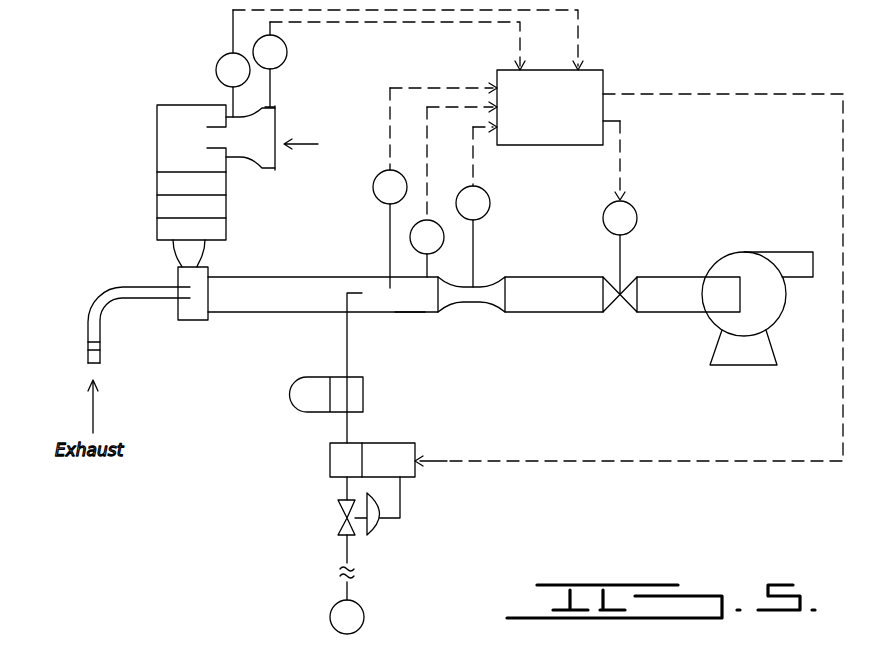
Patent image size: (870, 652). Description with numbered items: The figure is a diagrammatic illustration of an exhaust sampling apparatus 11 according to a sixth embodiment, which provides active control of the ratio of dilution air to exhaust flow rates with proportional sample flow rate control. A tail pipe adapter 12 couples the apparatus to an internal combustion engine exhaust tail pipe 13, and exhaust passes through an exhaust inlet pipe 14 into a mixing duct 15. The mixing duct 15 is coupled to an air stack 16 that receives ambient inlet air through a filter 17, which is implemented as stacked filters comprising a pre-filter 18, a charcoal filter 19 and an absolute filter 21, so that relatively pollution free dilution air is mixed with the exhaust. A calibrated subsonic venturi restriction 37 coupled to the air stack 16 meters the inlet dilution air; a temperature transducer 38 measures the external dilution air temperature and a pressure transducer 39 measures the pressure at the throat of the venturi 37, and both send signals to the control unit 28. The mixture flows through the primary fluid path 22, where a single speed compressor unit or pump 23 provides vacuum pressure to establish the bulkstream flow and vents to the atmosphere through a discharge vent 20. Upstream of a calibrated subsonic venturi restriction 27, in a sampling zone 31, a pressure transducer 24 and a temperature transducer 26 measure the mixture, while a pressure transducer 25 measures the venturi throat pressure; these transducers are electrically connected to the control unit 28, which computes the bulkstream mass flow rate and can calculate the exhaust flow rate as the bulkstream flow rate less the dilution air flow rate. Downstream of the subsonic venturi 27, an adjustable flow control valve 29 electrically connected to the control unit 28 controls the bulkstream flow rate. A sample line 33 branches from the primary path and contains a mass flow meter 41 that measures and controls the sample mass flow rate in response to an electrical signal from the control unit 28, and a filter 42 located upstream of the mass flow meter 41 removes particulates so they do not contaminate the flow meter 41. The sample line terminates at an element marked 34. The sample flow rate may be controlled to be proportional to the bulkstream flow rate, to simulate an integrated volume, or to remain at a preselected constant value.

The apparatus 11 is at (729, 192).
The tail pipe adapter 12 is at (88, 346).
The exhaust tail pipe 13 is at (88, 358).
The exhaust inlet pipe 14 is at (95, 305).
The mixing duct 15 is at (195, 320).
The air stack 16 is at (207, 252).
The filter 17 is at (247, 214).
The pre-filter 18 is at (157, 182).
The charcoal filter 19 is at (157, 200).
The discharge vent 20 is at (813, 258).
The absolute filter 21 is at (157, 232).
The primary fluid path 22 is at (306, 276).
The compressor unit or pump 23 is at (725, 357).
The pressure transducer 24 is at (440, 243).
The pressure transducer 25 is at (482, 198).
The temperature transducer 26 is at (383, 196).
The subsonic venturi restriction 27 is at (477, 313).
The control unit 28 is at (595, 80).
The adjustable flow control valve 29 is at (625, 325).
The sampling zone 31 is at (410, 313).
The sample line 33 is at (347, 343).
The pressure source 34 is at (330, 617).
The subsonic venturi restriction 37 is at (292, 104).
The temperature transducer 38 is at (287, 50).
The pressure transducer 39 is at (222, 62).
The mass flow meter 41 is at (415, 478).
The filter 42 is at (290, 410).